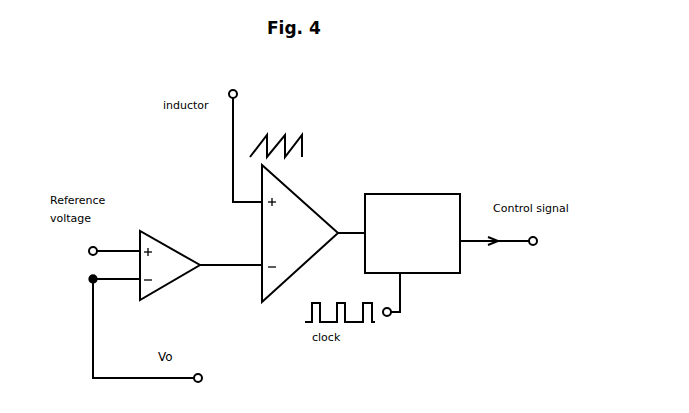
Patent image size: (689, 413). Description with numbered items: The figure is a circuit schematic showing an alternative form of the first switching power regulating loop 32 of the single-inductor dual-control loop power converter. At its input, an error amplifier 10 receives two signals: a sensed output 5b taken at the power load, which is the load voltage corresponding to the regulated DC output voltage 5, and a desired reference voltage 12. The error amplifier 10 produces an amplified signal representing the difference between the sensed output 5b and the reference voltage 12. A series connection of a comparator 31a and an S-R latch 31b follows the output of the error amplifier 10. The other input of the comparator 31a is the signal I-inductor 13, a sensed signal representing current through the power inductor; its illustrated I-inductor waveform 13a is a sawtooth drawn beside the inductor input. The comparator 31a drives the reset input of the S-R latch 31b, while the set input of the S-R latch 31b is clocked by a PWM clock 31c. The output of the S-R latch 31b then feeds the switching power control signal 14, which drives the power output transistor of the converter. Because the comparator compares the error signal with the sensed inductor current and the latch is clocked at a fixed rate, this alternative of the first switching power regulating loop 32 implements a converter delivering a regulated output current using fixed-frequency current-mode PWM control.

The regulated DC output voltage 5 is at (203, 375).
The sensed output 5b is at (88, 283).
The error amplifier 10 is at (163, 242).
The reference voltage 12 is at (88, 252).
The signal I-inductor 13 is at (230, 92).
The I-inductor waveform 13a is at (283, 130).
The switching power control signal 14 is at (537, 245).
The comparator 31a is at (307, 200).
The S-R latch 31b is at (403, 193).
The PWM clock 31c is at (392, 318).
The first switching power regulating loop 32 is at (512, 97).